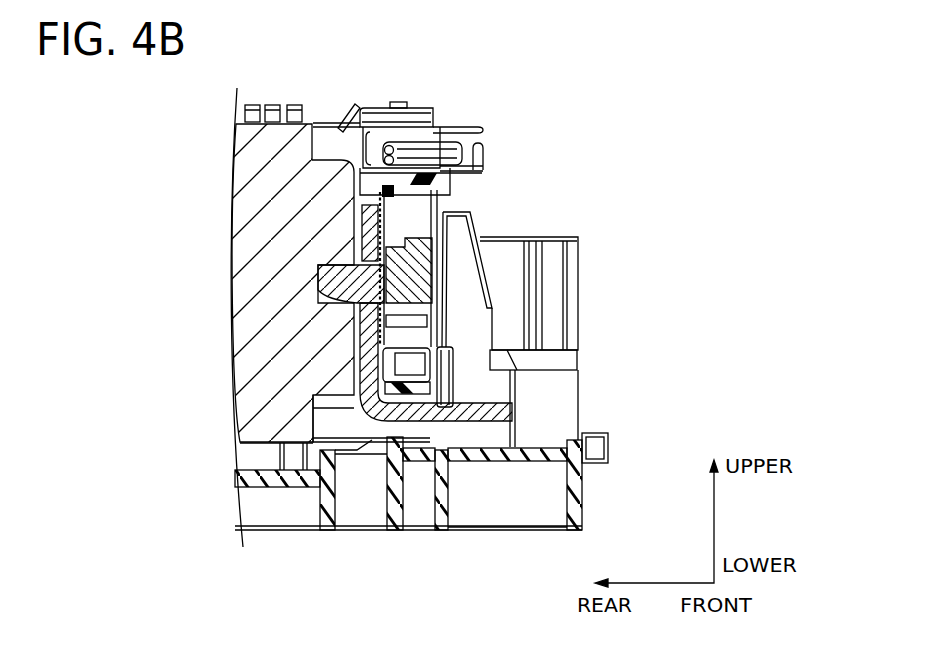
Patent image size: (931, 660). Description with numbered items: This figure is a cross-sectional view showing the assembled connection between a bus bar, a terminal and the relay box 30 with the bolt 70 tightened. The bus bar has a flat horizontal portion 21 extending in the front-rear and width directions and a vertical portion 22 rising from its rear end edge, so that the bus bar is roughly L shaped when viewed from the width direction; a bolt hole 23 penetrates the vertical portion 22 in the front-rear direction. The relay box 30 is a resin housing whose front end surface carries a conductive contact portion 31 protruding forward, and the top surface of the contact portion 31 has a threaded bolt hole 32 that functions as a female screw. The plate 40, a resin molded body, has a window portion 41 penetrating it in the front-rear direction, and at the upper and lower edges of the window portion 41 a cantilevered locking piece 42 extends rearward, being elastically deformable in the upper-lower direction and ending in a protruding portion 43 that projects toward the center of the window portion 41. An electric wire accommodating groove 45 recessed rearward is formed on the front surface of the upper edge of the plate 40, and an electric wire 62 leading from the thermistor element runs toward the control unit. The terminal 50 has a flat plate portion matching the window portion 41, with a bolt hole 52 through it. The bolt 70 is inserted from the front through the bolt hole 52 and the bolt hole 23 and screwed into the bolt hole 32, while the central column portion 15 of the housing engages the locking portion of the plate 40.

The central column portion 15 is at (462, 225).
The horizontal portion 21 is at (494, 430).
The vertical portion 22 is at (365, 322).
The bolt hole 23 is at (325, 274).
The relay box 30 is at (243, 228).
The contact portion 31 is at (372, 208).
The bolt hole 32 is at (318, 292).
The plate 40 is at (402, 363).
The window portion 41 is at (385, 347).
The locking piece 42 is at (431, 193).
The protruding portion 43 is at (396, 193).
The electric wire accommodating groove 45 is at (452, 134).
The terminal 50 is at (486, 258).
The bolt hole 52 is at (395, 272).
The electric wire 62 is at (480, 155).
The bolt 70 is at (432, 294).